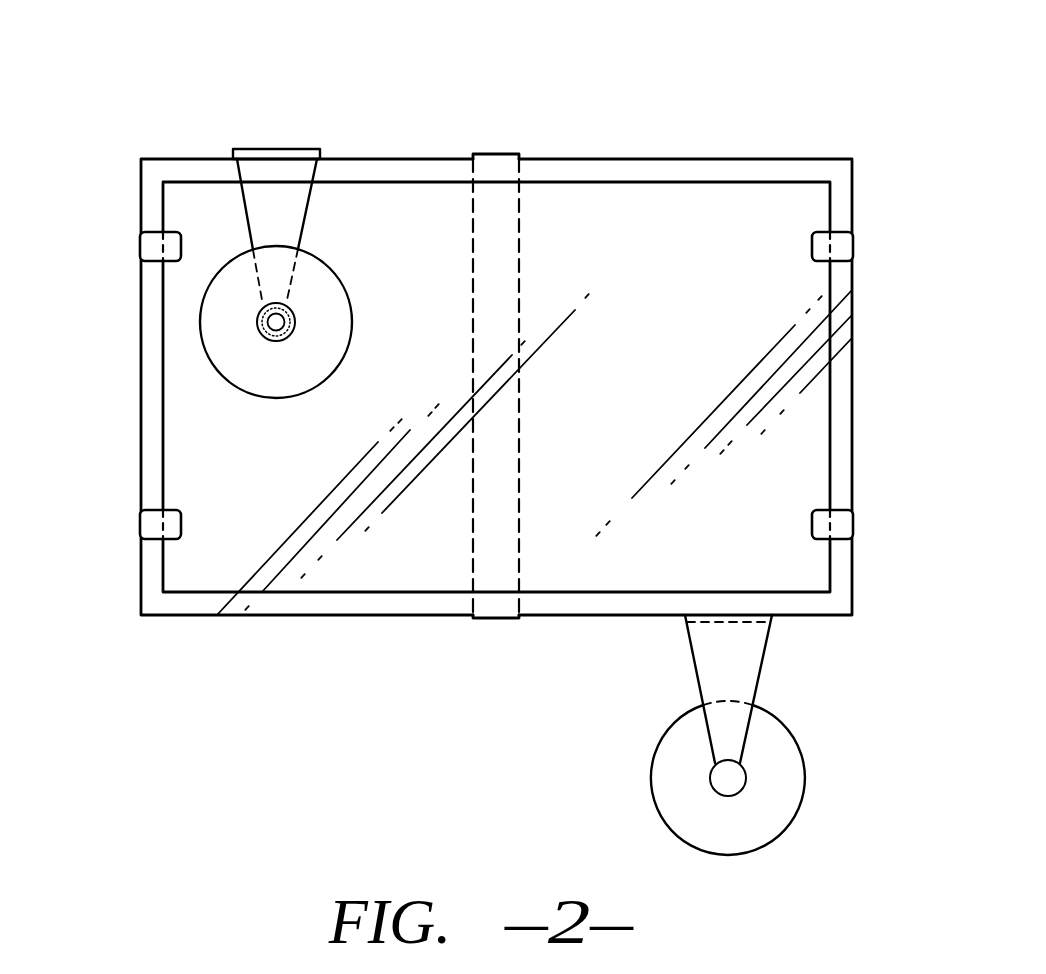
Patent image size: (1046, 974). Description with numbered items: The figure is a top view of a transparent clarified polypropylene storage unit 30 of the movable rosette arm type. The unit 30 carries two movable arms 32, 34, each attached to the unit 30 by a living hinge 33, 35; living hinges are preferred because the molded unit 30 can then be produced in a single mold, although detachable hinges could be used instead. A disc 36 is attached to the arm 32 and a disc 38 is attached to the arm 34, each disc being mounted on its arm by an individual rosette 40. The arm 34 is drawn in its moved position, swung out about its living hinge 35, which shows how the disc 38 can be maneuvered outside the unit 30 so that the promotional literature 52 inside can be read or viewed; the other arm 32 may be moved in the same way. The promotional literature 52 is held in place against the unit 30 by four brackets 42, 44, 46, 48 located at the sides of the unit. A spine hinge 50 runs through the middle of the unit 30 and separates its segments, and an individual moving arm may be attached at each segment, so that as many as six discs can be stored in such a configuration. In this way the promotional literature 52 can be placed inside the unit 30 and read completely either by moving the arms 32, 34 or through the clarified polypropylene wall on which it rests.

The storage unit 30 is at (703, 127).
The movable arm 32 is at (313, 203).
The living hinge 33 is at (263, 148).
The movable arm 34 is at (695, 658).
The living hinge 35 is at (772, 622).
The disc 36 is at (200, 327).
The disc 38 is at (653, 763).
The rosette 40 is at (267, 330).
The bracket 42 is at (152, 242).
The bracket 44 is at (152, 524).
The bracket 46 is at (840, 242).
The bracket 48 is at (840, 524).
The spine hinge 50 is at (518, 157).
The promotional literature 52 is at (395, 573).